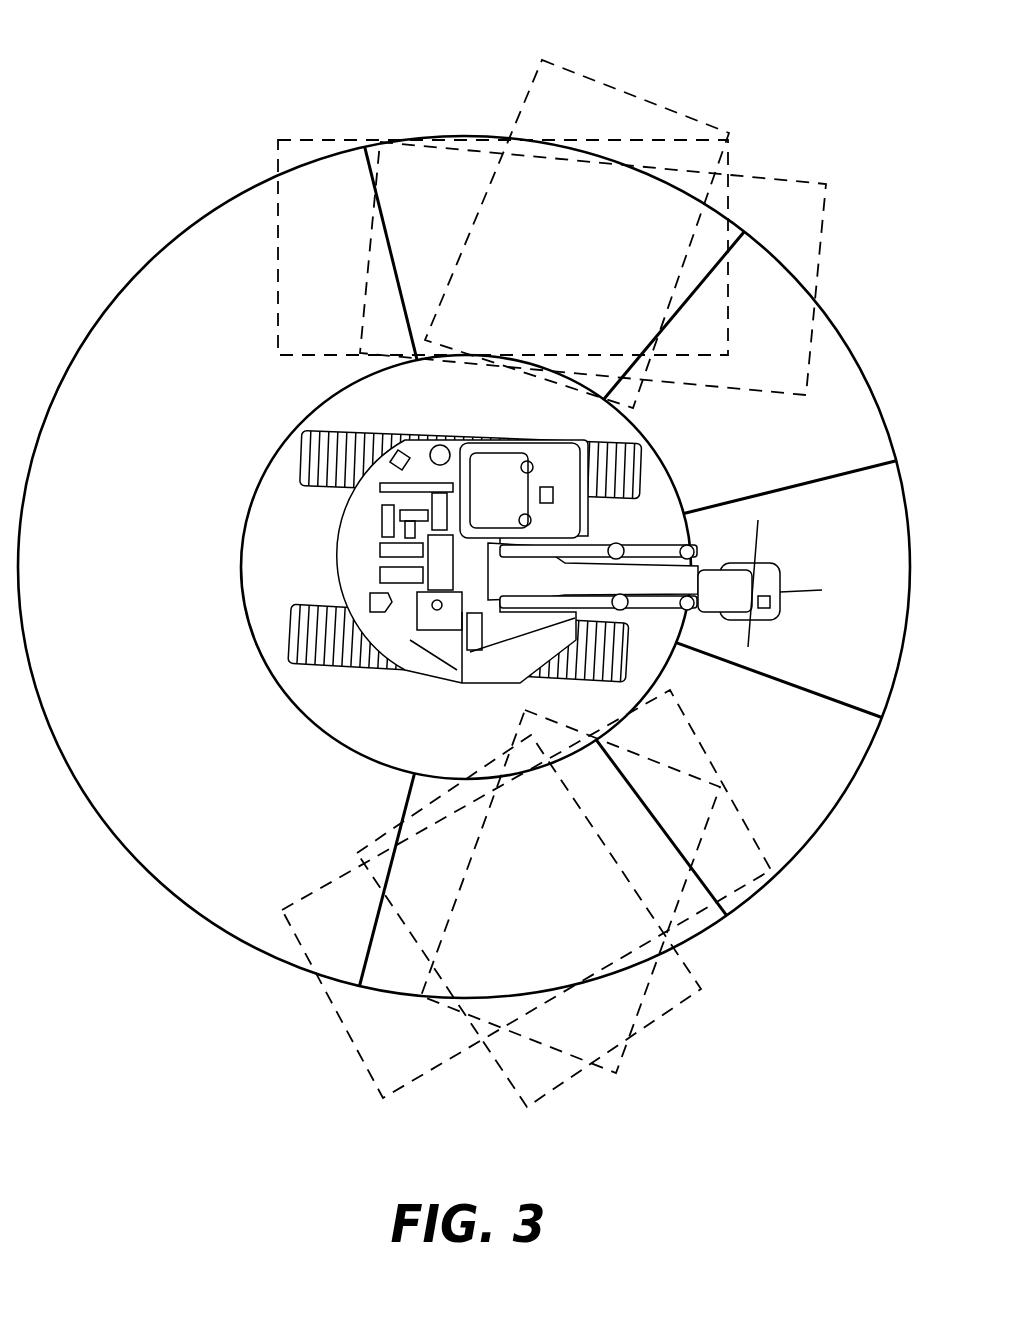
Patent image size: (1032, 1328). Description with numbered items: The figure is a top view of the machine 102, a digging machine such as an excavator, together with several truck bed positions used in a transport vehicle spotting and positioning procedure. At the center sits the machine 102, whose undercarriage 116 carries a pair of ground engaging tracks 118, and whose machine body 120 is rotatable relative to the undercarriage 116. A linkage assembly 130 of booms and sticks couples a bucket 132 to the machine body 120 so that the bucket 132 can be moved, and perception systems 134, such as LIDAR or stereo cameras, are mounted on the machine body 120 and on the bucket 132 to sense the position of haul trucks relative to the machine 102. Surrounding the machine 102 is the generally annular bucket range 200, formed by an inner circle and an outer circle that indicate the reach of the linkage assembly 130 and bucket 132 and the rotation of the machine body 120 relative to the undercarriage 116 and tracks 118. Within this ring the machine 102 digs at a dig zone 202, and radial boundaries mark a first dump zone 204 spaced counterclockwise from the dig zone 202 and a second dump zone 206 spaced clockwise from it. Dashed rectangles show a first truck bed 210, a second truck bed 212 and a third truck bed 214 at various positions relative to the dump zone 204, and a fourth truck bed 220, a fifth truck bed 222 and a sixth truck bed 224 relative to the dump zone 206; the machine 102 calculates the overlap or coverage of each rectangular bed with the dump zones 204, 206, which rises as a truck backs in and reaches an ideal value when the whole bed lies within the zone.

The machine 102 is at (497, 557).
The undercarriage 116 is at (356, 680).
The tracks 118 is at (338, 430).
The machine body 120 is at (320, 578).
The linkage assembly 130 is at (650, 577).
The bucket 132 is at (770, 622).
The perception systems 134 is at (557, 495).
The bucket range 200 is at (150, 872).
The dig zone 202 is at (891, 688).
The first dump zone 204 is at (385, 246).
The second dump zone 206 is at (370, 932).
The first truck bed 210 is at (769, 176).
The second truck bed 212 is at (630, 141).
The third truck bed 214 is at (597, 80).
The fourth truck bed 220 is at (419, 1078).
The fifth truck bed 222 is at (643, 1000).
The sixth truck bed 224 is at (563, 1085).